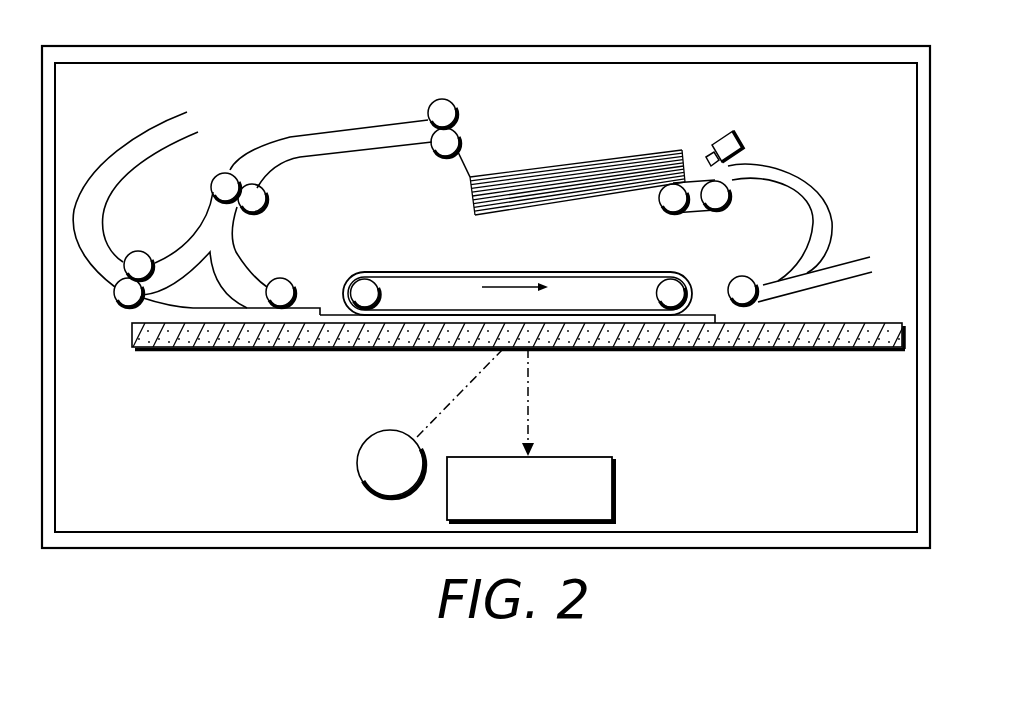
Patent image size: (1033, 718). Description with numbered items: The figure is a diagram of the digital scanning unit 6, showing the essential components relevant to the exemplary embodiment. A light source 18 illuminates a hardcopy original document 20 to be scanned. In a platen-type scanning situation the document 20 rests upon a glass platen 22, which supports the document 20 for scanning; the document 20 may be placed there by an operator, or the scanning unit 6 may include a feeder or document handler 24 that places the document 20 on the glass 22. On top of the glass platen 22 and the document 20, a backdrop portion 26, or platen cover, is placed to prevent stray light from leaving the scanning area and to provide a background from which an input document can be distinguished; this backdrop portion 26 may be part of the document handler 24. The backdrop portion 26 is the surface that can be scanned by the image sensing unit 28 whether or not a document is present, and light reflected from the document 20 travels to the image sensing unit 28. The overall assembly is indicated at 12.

The digital scanning unit 6 is at (707, 532).
The document handler 12 is at (648, 46).
The light source 18 is at (355, 455).
The hardcopy original document 20 is at (428, 323).
The glass platen 22 is at (272, 352).
The document handler 24 is at (744, 116).
The backdrop portion 26 is at (620, 282).
The image sensing unit 28 is at (613, 498).